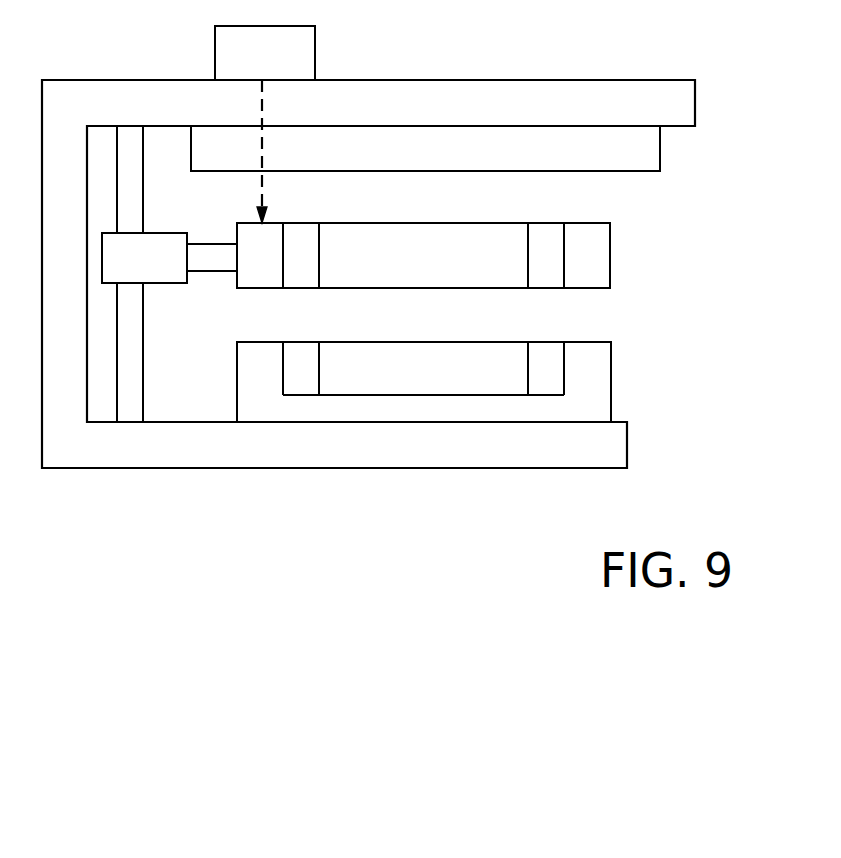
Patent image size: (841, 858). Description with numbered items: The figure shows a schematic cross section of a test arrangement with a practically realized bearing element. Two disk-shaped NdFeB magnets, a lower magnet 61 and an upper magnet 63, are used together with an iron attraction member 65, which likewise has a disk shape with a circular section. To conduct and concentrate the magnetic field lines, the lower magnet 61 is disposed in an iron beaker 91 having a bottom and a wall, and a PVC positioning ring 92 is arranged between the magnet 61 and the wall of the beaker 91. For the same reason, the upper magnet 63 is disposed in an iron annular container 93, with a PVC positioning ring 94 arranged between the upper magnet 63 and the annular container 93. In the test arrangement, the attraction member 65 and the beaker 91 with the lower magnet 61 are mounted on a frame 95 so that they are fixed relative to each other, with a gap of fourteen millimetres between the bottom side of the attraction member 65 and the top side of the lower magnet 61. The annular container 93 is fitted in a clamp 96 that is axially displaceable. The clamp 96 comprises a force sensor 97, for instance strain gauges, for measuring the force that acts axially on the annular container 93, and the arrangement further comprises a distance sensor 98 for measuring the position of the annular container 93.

The lower magnet 61 is at (487, 362).
The upper magnet 63 is at (487, 242).
The attraction member 65 is at (636, 146).
The beaker 91 is at (595, 405).
The positioning ring 92 is at (545, 382).
The annular container 93 is at (595, 281).
The positioning ring 94 is at (545, 259).
The frame 95 is at (333, 448).
The clamp 96 is at (157, 267).
The force sensor 97 is at (212, 257).
The distance sensor 98 is at (318, 36).